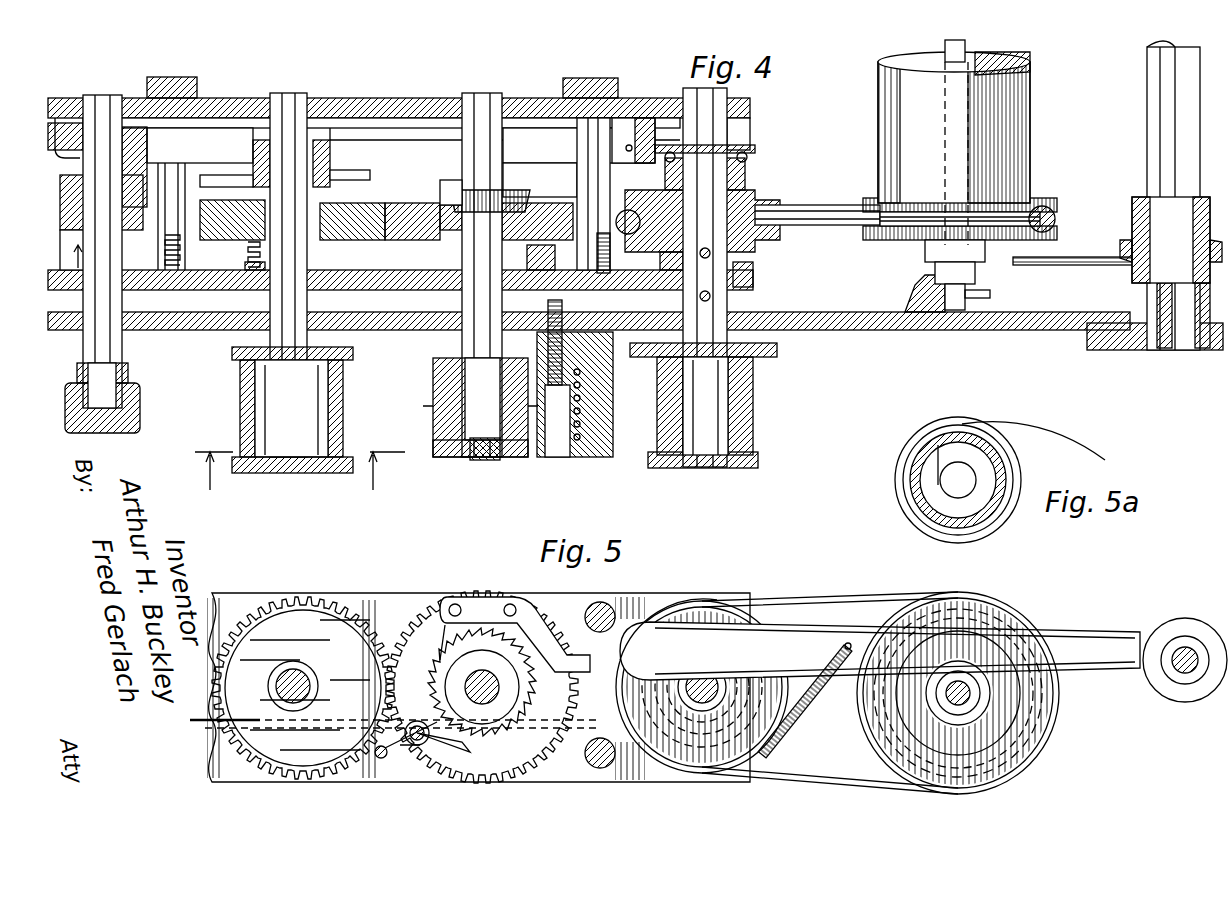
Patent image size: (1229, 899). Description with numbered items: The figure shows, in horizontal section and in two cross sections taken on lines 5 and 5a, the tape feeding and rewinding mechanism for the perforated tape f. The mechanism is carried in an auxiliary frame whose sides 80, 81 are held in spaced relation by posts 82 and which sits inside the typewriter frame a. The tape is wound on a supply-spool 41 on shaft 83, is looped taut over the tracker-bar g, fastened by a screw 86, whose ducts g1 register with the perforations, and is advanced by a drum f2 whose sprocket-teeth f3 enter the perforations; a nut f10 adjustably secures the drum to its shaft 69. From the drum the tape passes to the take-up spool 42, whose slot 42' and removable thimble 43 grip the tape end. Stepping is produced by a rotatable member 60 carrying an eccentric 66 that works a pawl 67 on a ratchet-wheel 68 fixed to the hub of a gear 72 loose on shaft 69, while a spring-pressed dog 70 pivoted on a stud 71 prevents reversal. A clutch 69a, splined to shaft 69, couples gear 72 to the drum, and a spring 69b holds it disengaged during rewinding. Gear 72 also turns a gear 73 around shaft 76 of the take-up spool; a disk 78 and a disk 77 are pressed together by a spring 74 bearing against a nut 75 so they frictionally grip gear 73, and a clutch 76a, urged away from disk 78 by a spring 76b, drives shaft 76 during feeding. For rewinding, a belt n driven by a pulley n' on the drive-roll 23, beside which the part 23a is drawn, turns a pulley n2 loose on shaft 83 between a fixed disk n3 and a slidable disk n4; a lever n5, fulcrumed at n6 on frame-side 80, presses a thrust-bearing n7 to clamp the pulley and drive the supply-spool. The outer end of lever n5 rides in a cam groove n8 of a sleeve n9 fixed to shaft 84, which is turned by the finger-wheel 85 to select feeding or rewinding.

In FIG. 4, the frame-side 80 is at (748, 110).
In FIG. 4, the lever n5 is at (400, 162).
In FIG. 4, the typewriter frame a is at (855, 326).
In FIG. 4, the cam groove n8 is at (58, 118).
In FIG. 4, the sleeve n9 is at (66, 226).
In FIG. 4, the section line 5 is at (65, 259).
In FIG. 4, the post 82 is at (177, 80).
In FIG. 5, the post 82 is at (601, 770).
In FIG. 4, the shaft 84 is at (108, 105).
In FIG. 4, the finger-wheel 85 is at (118, 432).
In FIG. 4, the shaft 76 is at (288, 100).
In FIG. 5, the shaft 76 is at (284, 674).
In FIG. 4, the clutch 76a is at (254, 178).
In FIG. 4, the spring 76b is at (328, 178).
In FIG. 4, the disk 78 is at (372, 200).
In FIG. 4, the disk 77 is at (352, 232).
In FIG. 5, the disk 77 is at (318, 602).
In FIG. 4, the gear 73 is at (364, 228).
In FIG. 5, the gear 73 is at (288, 596).
In FIG. 4, the spring 74 is at (252, 246).
In FIG. 4, the nut 75 is at (246, 266).
In FIG. 4, the shaft 69 is at (476, 100).
In FIG. 5, the shaft 69 is at (486, 700).
In FIG. 4, the spring 69b is at (455, 204).
In FIG. 4, the clutch 69a is at (520, 205).
In FIG. 4, the fulcrum n6 is at (630, 140).
In FIG. 4, the shaft 83 is at (712, 178).
In FIG. 5, the shaft 83 is at (703, 712).
In FIG. 4, the disk n3 is at (660, 265).
In FIG. 4, the thrust-bearing n7 is at (748, 158).
In FIG. 4, the frame-side 81 is at (752, 272).
In FIG. 4, the pulley n2 is at (780, 240).
In FIG. 4, the disk n4 is at (772, 198).
In FIG. 4, the belt n is at (941, 226).
In FIG. 5, the belt n is at (880, 620).
In FIG. 4, the pulley n' is at (1001, 218).
In FIG. 5, the pulley n' is at (984, 693).
In FIG. 4, the drive-roll 23 is at (940, 134).
In FIG. 4, the pin 23a is at (956, 312).
In FIG. 5, the pin 23a is at (975, 702).
In FIG. 4, the pawl 67 is at (1076, 266).
In FIG. 5, the pawl 67 is at (802, 640).
In FIG. 4, the rotatable member 60 is at (1157, 100).
In FIG. 4, the eccentric 66 is at (1170, 212).
In FIG. 5, the eccentric 66 is at (1180, 645).
In FIG. 4, the take-up spool 42 is at (272, 402).
In FIG. 4, the thimble 43 is at (250, 472).
In FIG. 4, the sprocket-teeth f3 is at (433, 405).
In FIG. 4, the drum f2 is at (442, 456).
In FIG. 4, the nut f10 is at (480, 460).
In FIG. 4, the tracker-bar g is at (604, 458).
In FIG. 4, the duct g1 is at (560, 458).
In FIG. 4, the supply-spool 41 is at (755, 400).
In FIG. 4, the ratchet-wheel 68 is at (545, 275).
In FIG. 5, the ratchet-wheel 68 is at (442, 632).
In FIG. 4, the screw 86 is at (605, 274).
In FIG. 4, the section line 5a is at (290, 463).
In FIG. 5A, the slot 42' is at (958, 467).
In FIG. 5A, the tape f is at (1033, 432).
In FIG. 5, the gear 72 is at (416, 620).
In FIG. 5, the dog 70 is at (463, 752).
In FIG. 5, the stud 71 is at (417, 746).